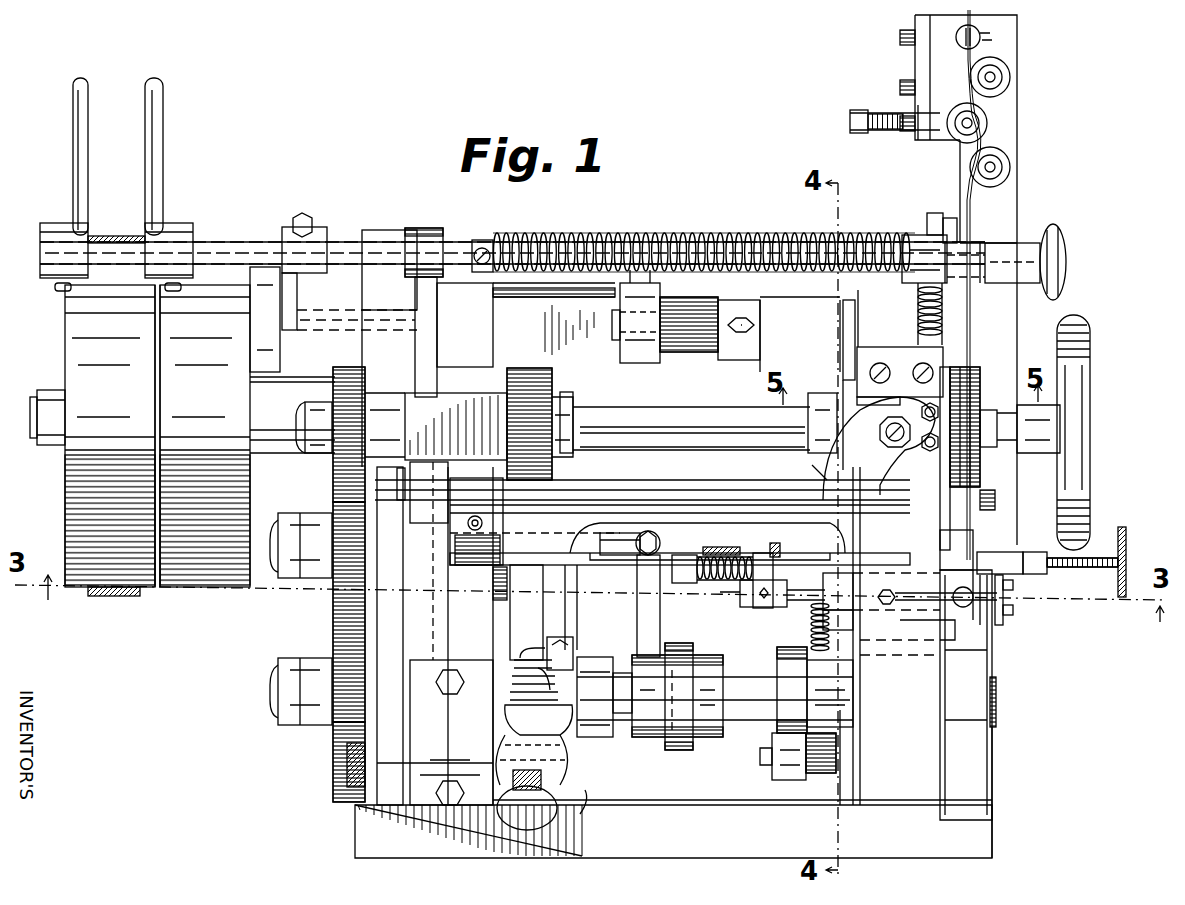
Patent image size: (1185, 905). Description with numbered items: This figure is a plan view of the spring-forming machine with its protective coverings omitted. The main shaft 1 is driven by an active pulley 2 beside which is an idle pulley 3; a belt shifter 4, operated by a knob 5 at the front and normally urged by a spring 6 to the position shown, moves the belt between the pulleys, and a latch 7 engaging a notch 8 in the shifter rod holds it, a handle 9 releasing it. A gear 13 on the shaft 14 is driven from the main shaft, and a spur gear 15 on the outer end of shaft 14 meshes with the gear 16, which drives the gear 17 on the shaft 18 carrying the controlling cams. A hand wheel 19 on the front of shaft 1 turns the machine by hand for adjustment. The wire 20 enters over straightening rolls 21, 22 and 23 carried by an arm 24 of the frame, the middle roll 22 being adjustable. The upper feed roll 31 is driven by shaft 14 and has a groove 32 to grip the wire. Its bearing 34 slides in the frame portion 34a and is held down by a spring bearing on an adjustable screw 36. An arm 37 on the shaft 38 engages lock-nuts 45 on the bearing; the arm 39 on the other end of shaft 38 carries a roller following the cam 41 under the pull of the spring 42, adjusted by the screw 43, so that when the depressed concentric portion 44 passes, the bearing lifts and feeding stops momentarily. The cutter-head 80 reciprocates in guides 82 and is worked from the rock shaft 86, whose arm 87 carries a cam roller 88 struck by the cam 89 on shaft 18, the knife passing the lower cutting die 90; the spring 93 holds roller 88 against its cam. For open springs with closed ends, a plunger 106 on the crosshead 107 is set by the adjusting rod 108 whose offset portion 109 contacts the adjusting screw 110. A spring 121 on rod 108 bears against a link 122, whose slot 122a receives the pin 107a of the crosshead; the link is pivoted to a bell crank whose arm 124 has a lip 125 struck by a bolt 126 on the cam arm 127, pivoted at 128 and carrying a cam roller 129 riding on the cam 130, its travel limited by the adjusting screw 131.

The main shaft 1 is at (263, 448).
The active pulley 2 is at (212, 587).
The idle pulley 3 is at (106, 587).
The belt shifter 4 is at (216, 244).
The knob 5 is at (1056, 236).
The spring 6 is at (651, 248).
The latch 7 is at (930, 213).
The notch 8 is at (868, 244).
The handle 9 is at (944, 228).
The gear 13 is at (550, 376).
The shaft 14 is at (714, 418).
The spur gear 15 is at (336, 378).
The gear 16 is at (338, 590).
The gear 17 is at (340, 742).
The shaft 18 is at (625, 672).
The hand wheel 19 is at (1085, 366).
The wire 20 is at (968, 218).
The straightening roll 21 is at (1010, 77).
The straightening roll 22 is at (962, 105).
The straightening roll 23 is at (1010, 165).
The arm 24 is at (1013, 206).
The upper feed roll 31 is at (970, 455).
The groove 32 is at (965, 402).
The bearing 34 is at (850, 372).
The frame portion 34a is at (901, 362).
The adjustable screw 36 is at (930, 460).
The arm 37 is at (870, 432).
The shaft 38 is at (745, 490).
The arm 39 is at (540, 615).
The cam 41 is at (568, 650).
The spring 42 is at (562, 690).
The adjusting screw 43 is at (555, 812).
The depressed concentric portion 44 is at (607, 674).
The lock-nuts 45 is at (882, 437).
The cutter-head 80 is at (980, 622).
The guides 82 is at (952, 548).
The rock shaft 86 is at (995, 697).
The arm 87 is at (848, 757).
The cam roller 88 is at (775, 786).
The cam 89 is at (778, 667).
The lower cutting die 90 is at (1003, 602).
The spring 93 is at (817, 475).
The plunger 106 is at (846, 622).
The crosshead 107 is at (772, 610).
The pin 107a is at (792, 542).
The adjusting rod 108 is at (946, 575).
The offset portion 109 is at (1002, 560).
The adjusting screw 110 is at (1125, 560).
The spring 121 is at (712, 586).
The link 122 is at (615, 569).
The slot 122a is at (731, 539).
The arm 124 is at (604, 545).
The lip 125 is at (660, 545).
The bolt 126 is at (655, 606).
The cam arm 127 is at (645, 467).
The pivot 128 is at (616, 320).
The cam roller 129 is at (700, 652).
The cam 130 is at (686, 743).
The adjusting screw 131 is at (677, 696).